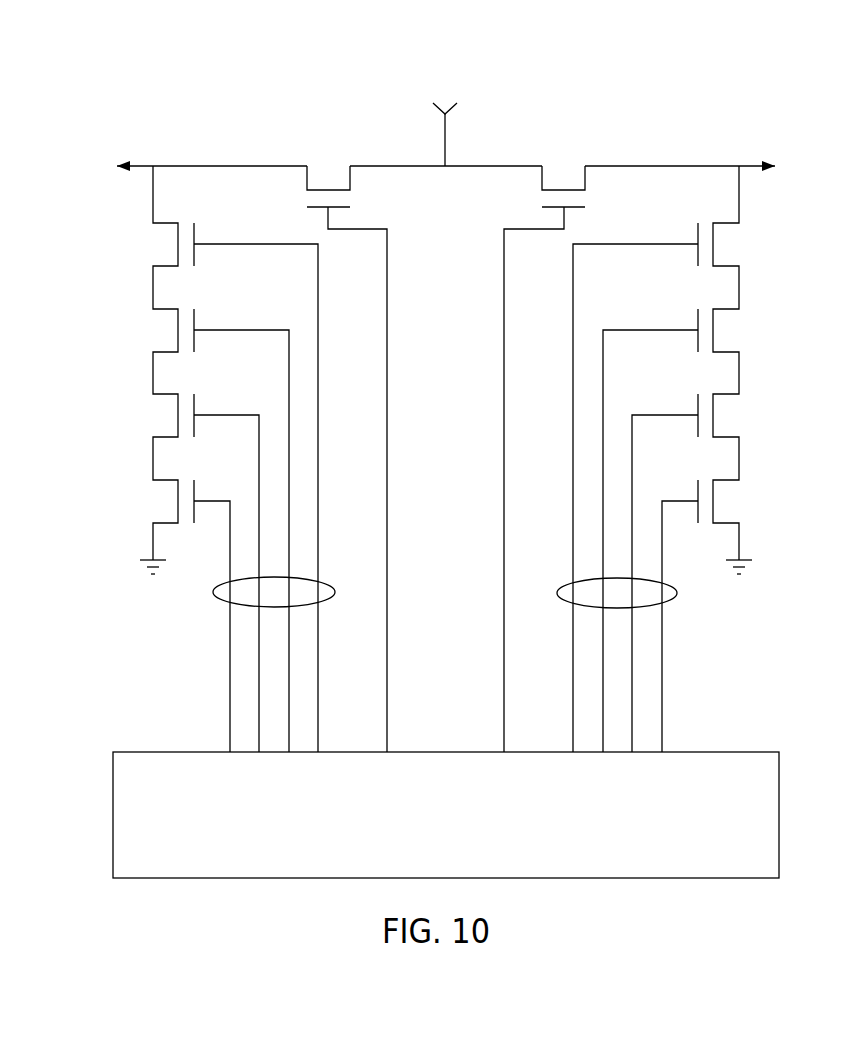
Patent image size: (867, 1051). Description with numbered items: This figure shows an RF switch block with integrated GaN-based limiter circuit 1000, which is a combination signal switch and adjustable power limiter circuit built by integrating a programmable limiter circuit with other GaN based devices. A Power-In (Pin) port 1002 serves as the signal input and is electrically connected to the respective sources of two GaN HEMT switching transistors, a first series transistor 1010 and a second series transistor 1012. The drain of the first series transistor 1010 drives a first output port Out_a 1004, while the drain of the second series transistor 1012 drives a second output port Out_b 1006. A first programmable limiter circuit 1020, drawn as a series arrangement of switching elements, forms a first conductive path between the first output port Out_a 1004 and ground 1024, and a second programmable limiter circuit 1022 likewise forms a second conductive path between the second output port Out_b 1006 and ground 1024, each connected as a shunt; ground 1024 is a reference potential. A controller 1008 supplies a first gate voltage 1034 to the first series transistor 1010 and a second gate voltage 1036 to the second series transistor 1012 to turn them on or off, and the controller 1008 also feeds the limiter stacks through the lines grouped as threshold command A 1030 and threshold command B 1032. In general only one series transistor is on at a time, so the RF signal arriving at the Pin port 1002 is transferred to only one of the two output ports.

The RF switch block with integrated GaN-based limiter circuit 1000 is at (446, 439).
The Power-In (Pin) port 1002 is at (447, 138).
The first output port Out_a 1004 is at (203, 165).
The second output port Out_b 1006 is at (688, 165).
The controller 1008 is at (432, 752).
The first series transistor 1010 is at (328, 186).
The second series transistor 1012 is at (564, 186).
The first programmable limiter circuit 1020 is at (133, 223).
The second programmable limiter circuit 1022 is at (758, 223).
The ground 1024 is at (153, 549).
The threshold command A lines 1030 is at (213, 592).
The threshold command B lines 1032 is at (677, 594).
The first gate voltage 1034 is at (387, 441).
The second gate voltage 1036 is at (504, 384).